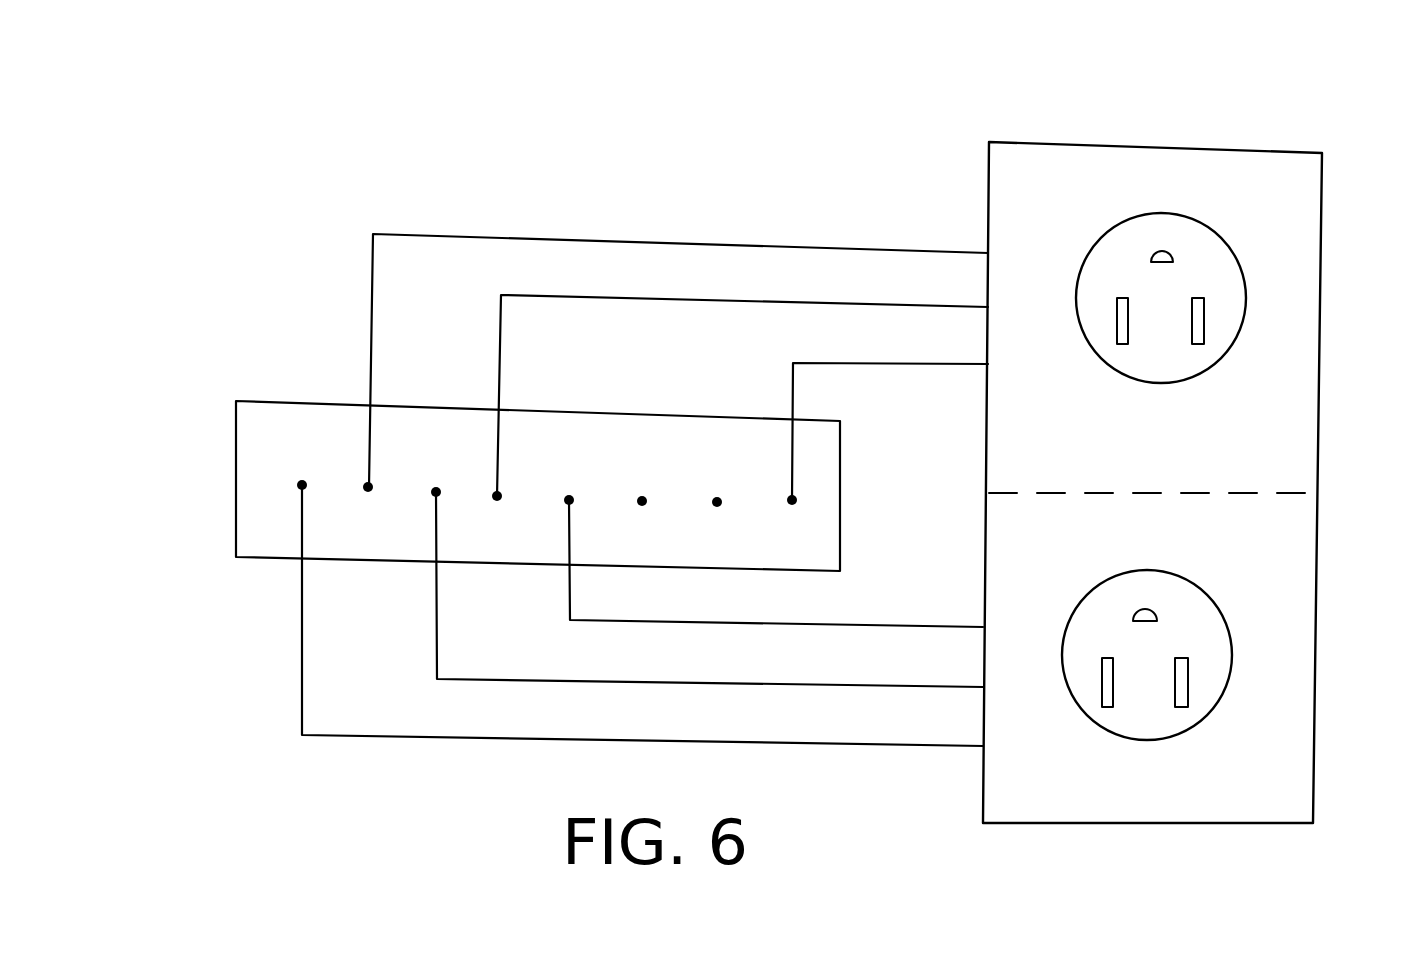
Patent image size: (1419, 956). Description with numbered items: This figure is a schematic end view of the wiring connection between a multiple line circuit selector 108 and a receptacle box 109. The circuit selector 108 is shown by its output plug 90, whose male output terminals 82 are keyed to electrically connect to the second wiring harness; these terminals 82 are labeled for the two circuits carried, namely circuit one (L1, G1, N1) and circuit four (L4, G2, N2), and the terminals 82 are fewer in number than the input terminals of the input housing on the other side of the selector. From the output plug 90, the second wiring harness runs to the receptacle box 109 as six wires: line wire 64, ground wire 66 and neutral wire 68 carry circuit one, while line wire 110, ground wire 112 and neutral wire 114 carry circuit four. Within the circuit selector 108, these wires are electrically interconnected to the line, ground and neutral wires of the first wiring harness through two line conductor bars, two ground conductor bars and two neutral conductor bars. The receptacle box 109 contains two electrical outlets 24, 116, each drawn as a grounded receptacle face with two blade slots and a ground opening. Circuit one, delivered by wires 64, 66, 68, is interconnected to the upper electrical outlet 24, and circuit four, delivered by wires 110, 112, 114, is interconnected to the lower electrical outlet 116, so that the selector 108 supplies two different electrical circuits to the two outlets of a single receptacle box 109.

The electrical outlet 24 is at (1247, 293).
The line wire 64 is at (793, 393).
The ground wire 66 is at (499, 389).
The neutral wire 68 is at (371, 368).
The male output terminals 82 is at (717, 502).
The output plug 90 is at (262, 433).
The multiple line circuit selector 108 is at (212, 482).
The receptacle box 109 is at (1149, 126).
The line wire 110 is at (573, 596).
The ground wire 112 is at (438, 627).
The neutral wire 114 is at (303, 625).
The electrical outlet 116 is at (1234, 664).